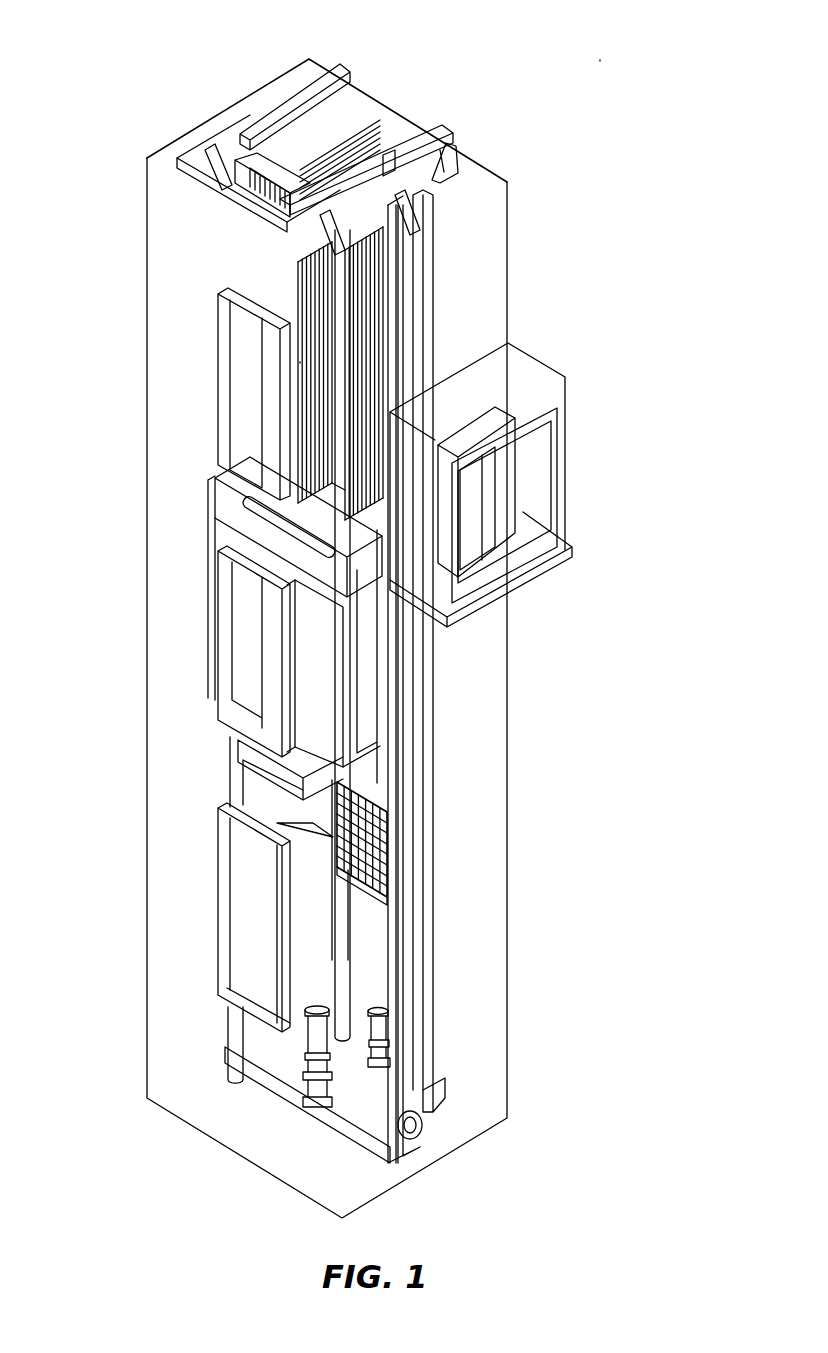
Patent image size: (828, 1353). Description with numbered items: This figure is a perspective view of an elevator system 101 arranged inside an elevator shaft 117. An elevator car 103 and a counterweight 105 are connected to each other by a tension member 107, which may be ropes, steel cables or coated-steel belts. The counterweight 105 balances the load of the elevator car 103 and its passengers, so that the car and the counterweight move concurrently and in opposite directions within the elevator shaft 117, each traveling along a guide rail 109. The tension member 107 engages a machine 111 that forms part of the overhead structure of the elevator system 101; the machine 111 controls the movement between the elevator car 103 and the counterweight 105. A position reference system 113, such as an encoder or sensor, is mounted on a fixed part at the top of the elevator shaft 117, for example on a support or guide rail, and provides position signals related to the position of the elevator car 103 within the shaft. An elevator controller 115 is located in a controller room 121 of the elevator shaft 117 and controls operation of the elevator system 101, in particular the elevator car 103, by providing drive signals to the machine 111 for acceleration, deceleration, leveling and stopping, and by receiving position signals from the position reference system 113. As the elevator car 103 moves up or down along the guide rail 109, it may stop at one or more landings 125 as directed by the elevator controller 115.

The elevator system 101 is at (568, 108).
The elevator car 103 is at (333, 688).
The counterweight 105 is at (388, 850).
The tension member 107 is at (335, 393).
The guide rail 109 is at (410, 778).
The machine 111 is at (250, 155).
The position reference system 113 is at (405, 240).
The elevator controller 115 is at (512, 487).
The elevator shaft 117 is at (190, 776).
The controller room 121 is at (568, 377).
The landings 125 is at (212, 379).